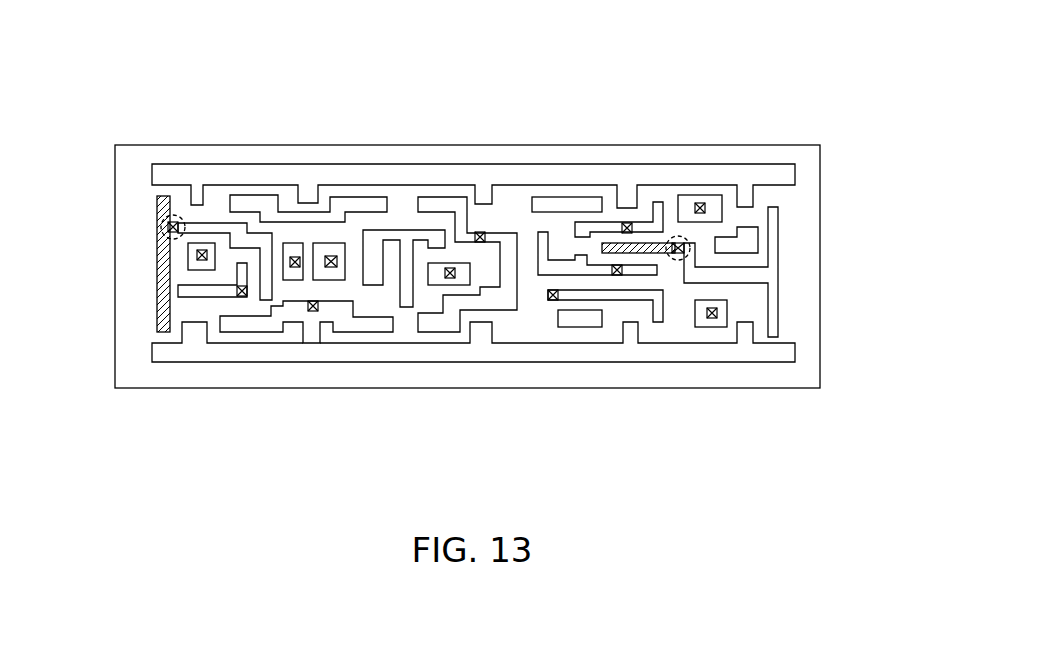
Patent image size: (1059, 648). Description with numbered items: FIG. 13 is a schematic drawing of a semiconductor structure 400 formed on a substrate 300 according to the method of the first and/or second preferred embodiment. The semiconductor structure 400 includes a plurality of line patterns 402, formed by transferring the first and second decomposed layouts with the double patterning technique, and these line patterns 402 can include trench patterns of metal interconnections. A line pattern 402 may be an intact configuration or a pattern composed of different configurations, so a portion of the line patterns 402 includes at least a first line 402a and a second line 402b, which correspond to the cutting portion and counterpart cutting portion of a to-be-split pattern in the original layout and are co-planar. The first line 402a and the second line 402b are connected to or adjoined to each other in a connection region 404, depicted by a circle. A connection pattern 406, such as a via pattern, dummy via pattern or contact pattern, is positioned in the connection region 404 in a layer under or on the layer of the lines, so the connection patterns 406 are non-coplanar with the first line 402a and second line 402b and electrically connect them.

The substrate 300 is at (820, 205).
The semiconductor structure 400 is at (786, 60).
The line patterns 402 is at (125, 78).
The first line 402a is at (166, 196).
The second line 402b is at (181, 222).
The connection region 404 is at (186, 225).
The connection pattern 406 is at (294, 257).